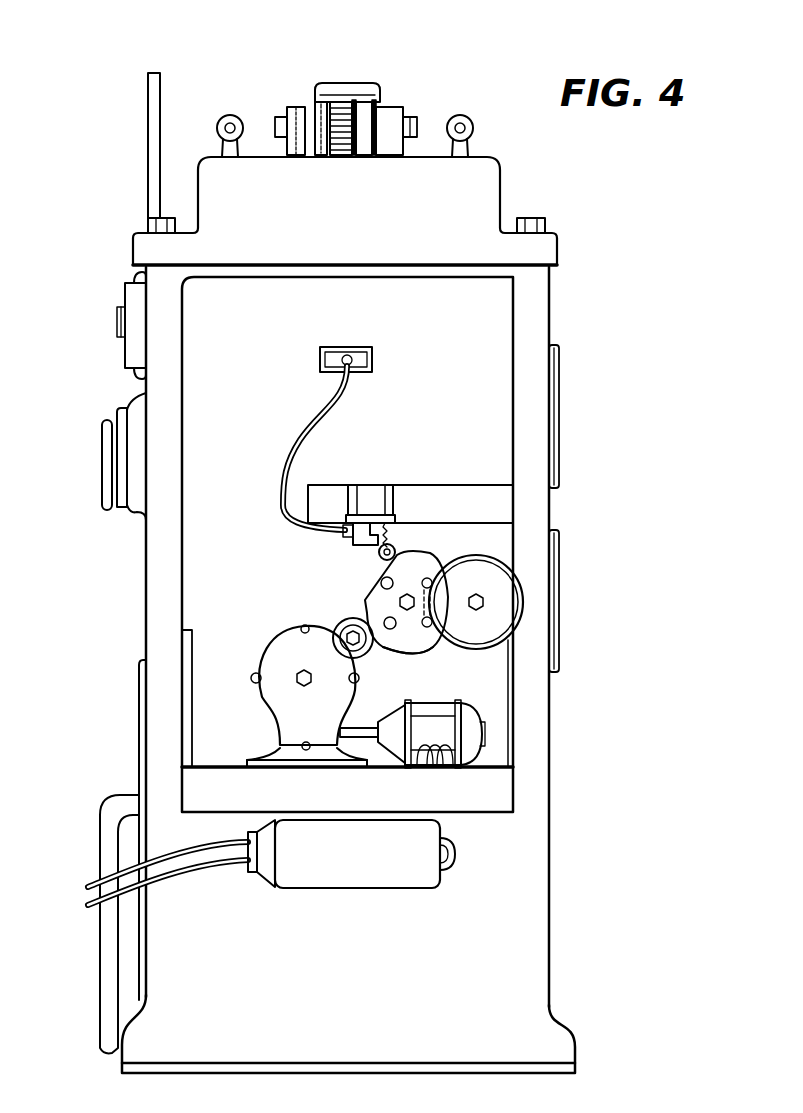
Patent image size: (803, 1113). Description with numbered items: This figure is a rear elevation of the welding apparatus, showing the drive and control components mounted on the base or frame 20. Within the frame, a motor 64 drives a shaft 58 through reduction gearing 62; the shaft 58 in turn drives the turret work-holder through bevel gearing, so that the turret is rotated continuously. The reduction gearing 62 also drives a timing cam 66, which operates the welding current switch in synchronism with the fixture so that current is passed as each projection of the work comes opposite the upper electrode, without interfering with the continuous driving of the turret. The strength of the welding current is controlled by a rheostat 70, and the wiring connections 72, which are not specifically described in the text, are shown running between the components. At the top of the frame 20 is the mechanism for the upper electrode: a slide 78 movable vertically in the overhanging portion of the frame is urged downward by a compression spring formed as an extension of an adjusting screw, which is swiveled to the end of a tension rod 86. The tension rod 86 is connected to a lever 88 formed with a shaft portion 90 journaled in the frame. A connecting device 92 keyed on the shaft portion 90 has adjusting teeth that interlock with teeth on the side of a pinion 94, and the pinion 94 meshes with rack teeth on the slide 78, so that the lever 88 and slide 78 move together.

The base or frame 20 is at (508, 885).
The shaft 58 is at (483, 600).
The reduction gearing 62 is at (458, 570).
The motor 64 is at (460, 725).
The timing cam 66 is at (420, 642).
The rheostat 70 is at (110, 447).
The wiring connections 72 is at (345, 403).
The slide 78 is at (345, 92).
The tension rod 86 is at (360, 150).
The lever 88 is at (369, 152).
The shaft portion 90 is at (380, 132).
The connecting device 92 is at (320, 120).
The pinion 94 is at (340, 130).